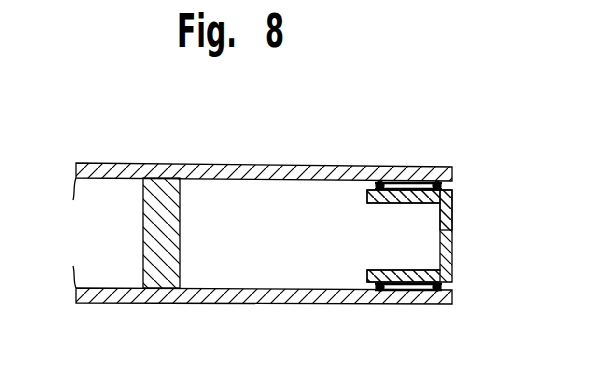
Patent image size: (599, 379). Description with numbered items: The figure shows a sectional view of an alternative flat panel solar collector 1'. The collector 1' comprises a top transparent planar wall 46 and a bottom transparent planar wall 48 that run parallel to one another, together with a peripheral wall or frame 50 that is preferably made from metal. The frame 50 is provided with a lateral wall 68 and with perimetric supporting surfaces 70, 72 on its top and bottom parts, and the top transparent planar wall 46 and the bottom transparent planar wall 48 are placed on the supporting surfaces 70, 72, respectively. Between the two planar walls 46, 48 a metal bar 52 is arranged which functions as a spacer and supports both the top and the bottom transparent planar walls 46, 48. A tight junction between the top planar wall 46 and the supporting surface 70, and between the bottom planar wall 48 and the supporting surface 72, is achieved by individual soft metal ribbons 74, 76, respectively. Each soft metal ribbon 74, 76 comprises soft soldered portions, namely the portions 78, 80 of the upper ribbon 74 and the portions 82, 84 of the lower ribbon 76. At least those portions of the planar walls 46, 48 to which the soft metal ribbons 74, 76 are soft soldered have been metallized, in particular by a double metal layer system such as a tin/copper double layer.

The flat panel solar collector 1' is at (108, 118).
The top transparent planar wall 46 is at (254, 165).
The bottom transparent planar wall 48 is at (274, 304).
The metal bar 52 is at (165, 278).
The peripheral wall or frame 50 is at (452, 244).
The lateral wall 68 is at (452, 207).
The perimetric supporting surface 70 is at (367, 198).
The perimetric supporting surface 72 is at (367, 272).
The soft metal ribbon 74 is at (408, 182).
The soft metal ribbon 76 is at (408, 292).
The soft soldered portion 78 is at (439, 181).
The soft soldered portion 80 is at (379, 181).
The soft soldered portion 82 is at (438, 291).
The soft soldered portion 84 is at (378, 291).